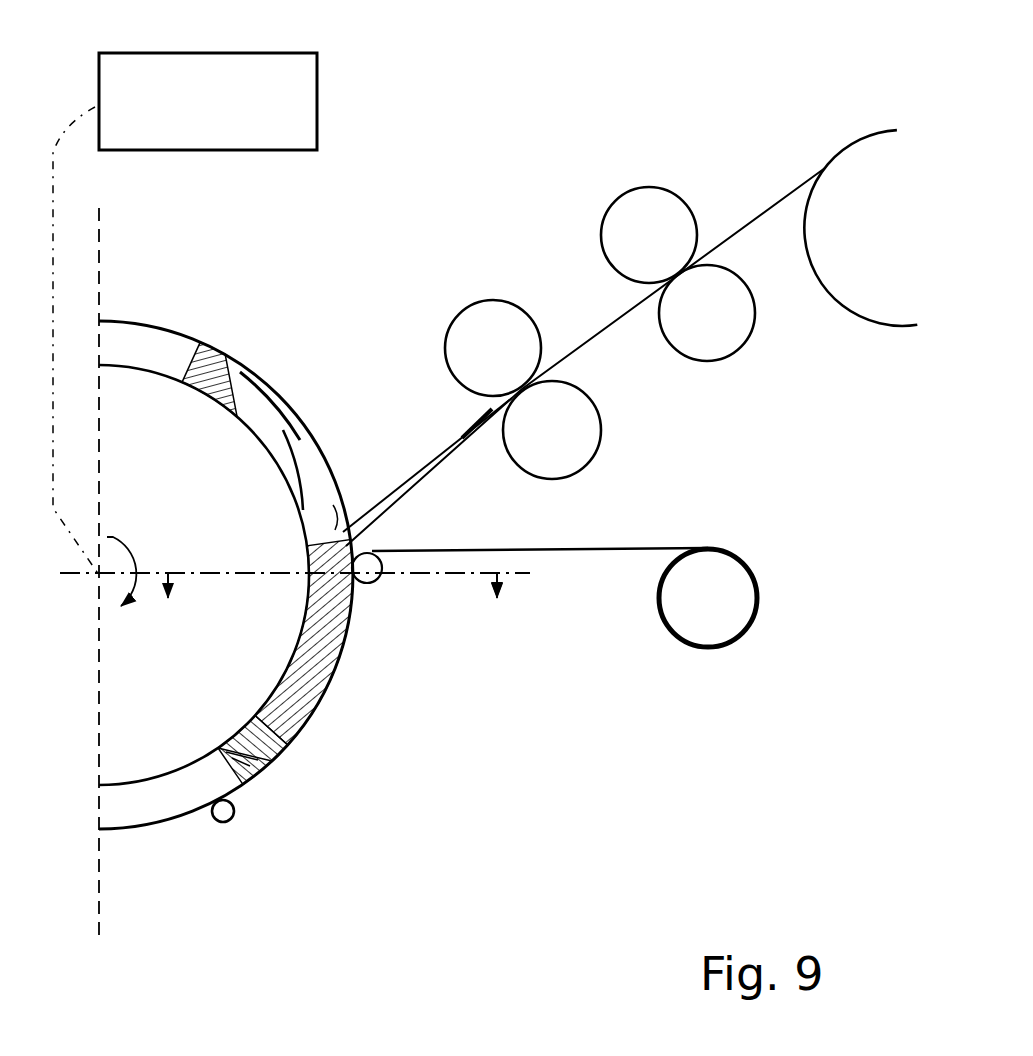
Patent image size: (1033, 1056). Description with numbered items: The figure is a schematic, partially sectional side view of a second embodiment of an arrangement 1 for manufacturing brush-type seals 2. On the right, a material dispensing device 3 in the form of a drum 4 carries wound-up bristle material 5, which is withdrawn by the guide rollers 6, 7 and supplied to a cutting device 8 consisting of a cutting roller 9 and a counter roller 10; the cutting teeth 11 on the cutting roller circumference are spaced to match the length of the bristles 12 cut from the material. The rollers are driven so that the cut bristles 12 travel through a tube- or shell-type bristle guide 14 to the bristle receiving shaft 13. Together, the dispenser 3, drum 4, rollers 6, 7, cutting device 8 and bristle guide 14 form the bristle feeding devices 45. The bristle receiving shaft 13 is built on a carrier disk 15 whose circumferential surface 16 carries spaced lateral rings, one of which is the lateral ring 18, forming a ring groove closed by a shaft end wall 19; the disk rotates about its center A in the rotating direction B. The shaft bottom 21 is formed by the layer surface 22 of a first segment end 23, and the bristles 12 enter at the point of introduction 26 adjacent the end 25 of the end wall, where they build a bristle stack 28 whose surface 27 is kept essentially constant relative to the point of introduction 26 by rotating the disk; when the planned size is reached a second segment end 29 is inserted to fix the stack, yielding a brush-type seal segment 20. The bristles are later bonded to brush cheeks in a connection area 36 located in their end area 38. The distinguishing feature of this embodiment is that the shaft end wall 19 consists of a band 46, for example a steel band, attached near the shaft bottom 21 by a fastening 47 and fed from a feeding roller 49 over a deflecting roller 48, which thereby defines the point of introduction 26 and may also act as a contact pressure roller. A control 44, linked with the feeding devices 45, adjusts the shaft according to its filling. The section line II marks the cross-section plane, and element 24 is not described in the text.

The arrangement 1 is at (706, 760).
The brush-type seal 2 is at (255, 598).
The material dispensing device 3 is at (857, 400).
The drum 4 is at (897, 238).
The bristle material 5 is at (787, 197).
The guide roller 6 is at (648, 212).
The guide roller 7 is at (712, 345).
The cutting device 8 is at (456, 224).
The cutting roller 9 is at (510, 327).
The counter roller 10 is at (567, 433).
The cutting teeth 11 is at (450, 333).
The bristles 12 is at (333, 485).
The bristle receiving shaft 13 is at (308, 486).
The bristle guide 14 is at (455, 437).
The carrier disk 15 is at (113, 380).
The circumferential surface 16 is at (150, 370).
The lateral ring 18 is at (248, 380).
The shaft end wall 19 is at (325, 715).
The brush-type seal segment 20 is at (270, 660).
The shaft bottom 21 is at (222, 743).
The layer surface 22 is at (253, 717).
The first segment end 23 is at (222, 745).
The seam 24 is at (259, 430).
The end 25 is at (374, 562).
The point of introduction 26 is at (384, 531).
The surface 27 is at (325, 551).
The bristle stack 28 is at (350, 640).
The second segment end 29 is at (218, 345).
The connection area 36 is at (303, 732).
The end area 38 is at (327, 667).
The control 44 is at (317, 107).
The bristle feeding devices 45 is at (733, 124).
The band 46 is at (610, 550).
The fastening 47 is at (224, 822).
The deflecting roller 48 is at (372, 583).
The feeding roller 49 is at (727, 597).
The center A is at (93, 578).
The rotating direction B is at (127, 537).
The section line II is at (332, 604).